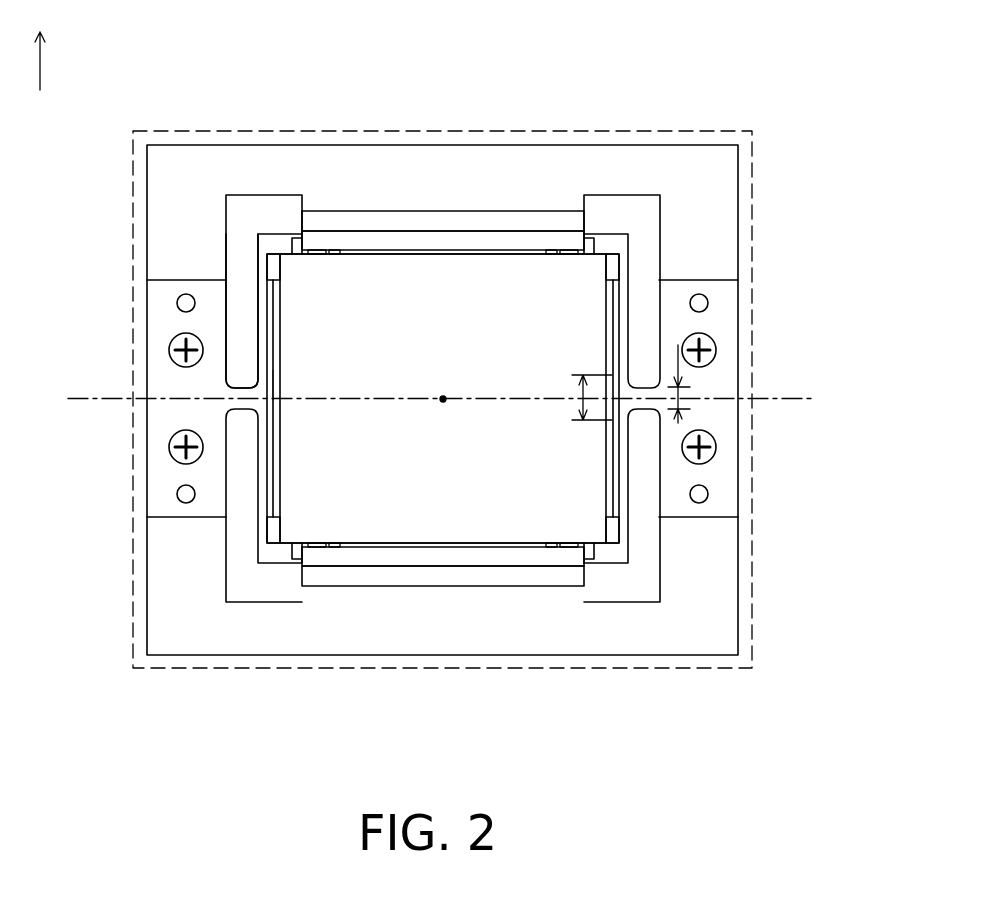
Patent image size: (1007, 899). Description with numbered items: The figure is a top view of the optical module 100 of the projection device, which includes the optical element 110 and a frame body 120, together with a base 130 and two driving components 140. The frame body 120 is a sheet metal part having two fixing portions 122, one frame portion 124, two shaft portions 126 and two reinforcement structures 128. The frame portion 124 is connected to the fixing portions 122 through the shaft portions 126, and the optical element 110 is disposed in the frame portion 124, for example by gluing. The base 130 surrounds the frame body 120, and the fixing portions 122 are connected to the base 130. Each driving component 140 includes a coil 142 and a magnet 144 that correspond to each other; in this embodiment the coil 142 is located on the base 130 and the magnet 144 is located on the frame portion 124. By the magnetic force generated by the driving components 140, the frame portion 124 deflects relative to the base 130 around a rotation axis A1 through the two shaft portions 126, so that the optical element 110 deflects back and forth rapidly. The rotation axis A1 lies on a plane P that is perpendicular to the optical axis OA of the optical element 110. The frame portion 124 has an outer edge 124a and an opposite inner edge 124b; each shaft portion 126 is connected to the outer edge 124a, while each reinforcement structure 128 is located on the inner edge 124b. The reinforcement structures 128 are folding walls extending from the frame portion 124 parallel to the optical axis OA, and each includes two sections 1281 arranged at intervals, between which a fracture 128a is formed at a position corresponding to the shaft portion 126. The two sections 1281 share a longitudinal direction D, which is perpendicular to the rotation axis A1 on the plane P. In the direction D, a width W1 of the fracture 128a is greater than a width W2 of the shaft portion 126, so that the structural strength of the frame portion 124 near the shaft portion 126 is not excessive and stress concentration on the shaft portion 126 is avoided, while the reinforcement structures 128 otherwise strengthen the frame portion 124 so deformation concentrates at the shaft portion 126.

The optical module 100 is at (441, 399).
The optical element 110 is at (518, 285).
The frame body 120 is at (441, 398).
The fixing portion 122 is at (160, 377).
The frame portion 124 is at (441, 398).
The outer edge 124a is at (252, 304).
The inner edge 124b is at (289, 383).
The shaft portion 126 is at (240, 392).
The reinforcement structure 128 is at (443, 510).
The section 1281 is at (275, 333).
The fracture 128a is at (286, 416).
The base 130 is at (600, 160).
The driving component 140 is at (443, 399).
The coil 142 is at (339, 222).
The magnet 144 is at (414, 240).
The optical axis OA is at (441, 393).
The rotation axis A1 is at (88, 400).
The direction D is at (48, 61).
The plane P is at (755, 592).
The width of the fracture W1 is at (575, 376).
The width of the shaft portion W2 is at (685, 412).